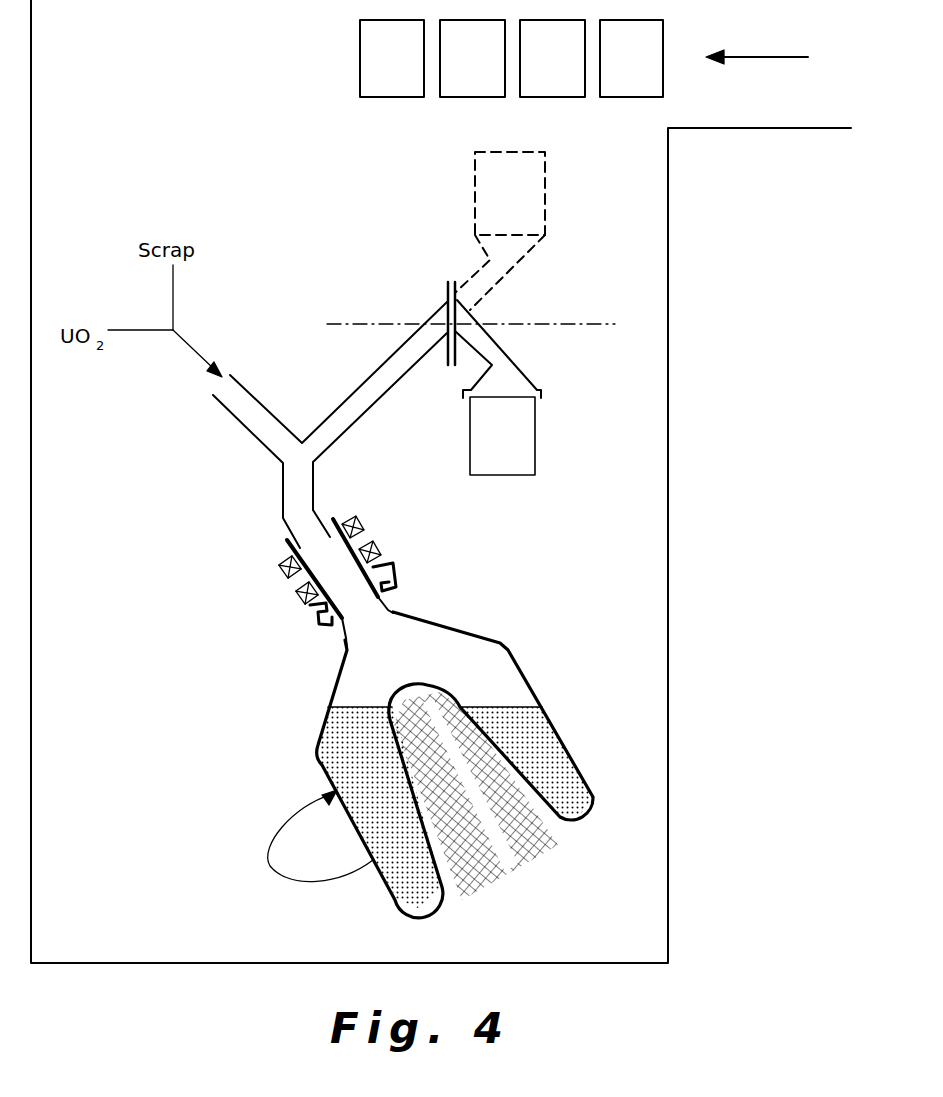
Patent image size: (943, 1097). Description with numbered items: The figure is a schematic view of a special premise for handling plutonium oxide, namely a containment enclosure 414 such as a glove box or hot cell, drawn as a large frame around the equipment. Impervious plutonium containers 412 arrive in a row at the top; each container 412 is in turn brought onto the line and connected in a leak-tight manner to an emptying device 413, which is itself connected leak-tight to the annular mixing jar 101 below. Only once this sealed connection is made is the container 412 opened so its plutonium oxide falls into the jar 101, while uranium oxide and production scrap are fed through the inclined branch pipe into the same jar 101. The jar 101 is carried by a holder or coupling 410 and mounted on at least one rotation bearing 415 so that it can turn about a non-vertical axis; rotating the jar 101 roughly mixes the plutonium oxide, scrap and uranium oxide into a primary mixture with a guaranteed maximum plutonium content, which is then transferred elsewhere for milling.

The annular mixing jar 101 is at (508, 640).
The holder/coupling 410 is at (400, 573).
The plutonium containers 412 is at (392, 72).
The emptying device 413 is at (447, 300).
The containment enclosure 414 is at (670, 313).
The rotation bearing 415 is at (362, 525).